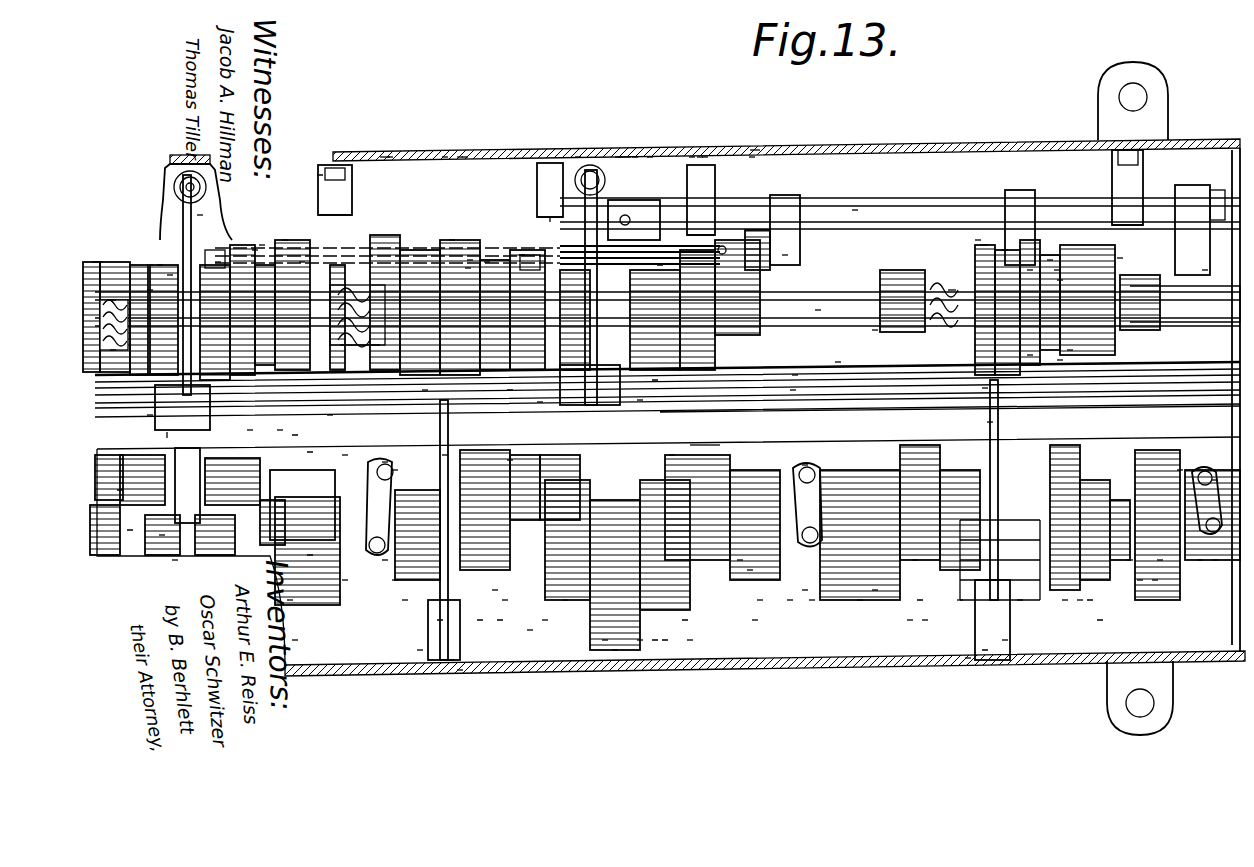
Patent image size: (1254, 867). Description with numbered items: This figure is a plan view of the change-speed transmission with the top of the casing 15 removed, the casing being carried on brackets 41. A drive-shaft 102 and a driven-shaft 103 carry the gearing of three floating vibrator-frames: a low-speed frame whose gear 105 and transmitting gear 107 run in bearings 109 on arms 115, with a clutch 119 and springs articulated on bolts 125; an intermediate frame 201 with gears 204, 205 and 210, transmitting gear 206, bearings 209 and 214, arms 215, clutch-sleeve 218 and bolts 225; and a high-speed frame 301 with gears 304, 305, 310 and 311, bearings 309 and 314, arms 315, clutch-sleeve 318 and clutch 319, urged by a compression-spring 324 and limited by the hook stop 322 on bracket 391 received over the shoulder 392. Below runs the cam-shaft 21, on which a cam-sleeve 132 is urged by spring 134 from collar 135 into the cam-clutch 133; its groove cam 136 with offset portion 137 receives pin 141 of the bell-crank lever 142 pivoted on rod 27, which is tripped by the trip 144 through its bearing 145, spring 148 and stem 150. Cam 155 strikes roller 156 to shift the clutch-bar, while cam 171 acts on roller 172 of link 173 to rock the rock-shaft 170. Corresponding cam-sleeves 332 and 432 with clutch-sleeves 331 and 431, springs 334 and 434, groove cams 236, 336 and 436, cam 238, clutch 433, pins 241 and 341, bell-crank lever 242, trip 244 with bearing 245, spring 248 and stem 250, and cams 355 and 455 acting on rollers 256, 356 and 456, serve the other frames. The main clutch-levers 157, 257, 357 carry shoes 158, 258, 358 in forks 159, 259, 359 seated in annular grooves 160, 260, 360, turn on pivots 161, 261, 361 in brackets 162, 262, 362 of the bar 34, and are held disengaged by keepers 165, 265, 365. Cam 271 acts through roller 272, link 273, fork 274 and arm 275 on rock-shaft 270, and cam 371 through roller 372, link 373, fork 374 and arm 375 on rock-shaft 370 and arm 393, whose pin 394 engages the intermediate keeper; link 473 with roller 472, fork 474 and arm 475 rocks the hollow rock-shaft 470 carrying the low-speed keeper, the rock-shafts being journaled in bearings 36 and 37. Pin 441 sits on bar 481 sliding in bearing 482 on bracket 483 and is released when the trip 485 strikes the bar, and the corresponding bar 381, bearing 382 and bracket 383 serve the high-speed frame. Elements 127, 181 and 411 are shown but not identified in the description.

The casing 15 is at (757, 155).
The cam-shaft 21 is at (818, 310).
The rod 27 is at (793, 390).
The bar 34 is at (705, 435).
The bearings 36 is at (560, 200).
The bearings 37 is at (915, 203).
The brackets 41 is at (1145, 78).
The drive-shaft 102 is at (420, 650).
The driven-shaft 103 is at (838, 362).
The gear 105 is at (162, 535).
The transmitting gear 107 is at (175, 560).
The bearings 109 is at (295, 435).
The arms 115 is at (170, 435).
The clutch 119 is at (310, 555).
The bolts 125 is at (160, 265).
The collar 127 is at (95, 262).
The cam-sleeve 132 is at (170, 275).
The cam-clutch 133 is at (285, 240).
The spring 134 is at (118, 287).
The collar 135 is at (100, 262).
The cam 136 is at (150, 290).
The offset portion 137 is at (150, 265).
The pin 141 is at (118, 352).
The bell-crank lever 142 is at (150, 415).
The trip 144 is at (218, 262).
The bearing 145 is at (250, 430).
The spring 148 is at (205, 222).
The stem 150 is at (280, 430).
The cam 155 is at (330, 415).
The roller 156 is at (345, 455).
The clutch lever 157 is at (320, 175).
The shoes 158 is at (395, 580).
The fork 159 is at (405, 600).
The annular groove 160 is at (385, 560).
The pivot 161 is at (295, 640).
The bracket 162 is at (290, 600).
The keeper 165 is at (390, 157).
The rock-shaft 170 is at (385, 157).
The cam 171 is at (255, 250).
The roller 172 is at (302, 262).
The link 173 is at (262, 245).
The gear 181 is at (345, 580).
The vibrator-frame 201 is at (640, 640).
The gear 204 is at (605, 640).
The gear 205 is at (545, 620).
The transmitting gear 206 is at (310, 452).
The bearings 209 is at (690, 640).
The gear 210 is at (530, 630).
The bearings 214 is at (480, 620).
The arms 215 is at (500, 620).
The clutch-sleeve 218 is at (760, 600).
The bolts 225 is at (505, 600).
The cam 236 is at (578, 157).
The cam 238 is at (618, 157).
The pin 241 is at (628, 157).
The bell-crank lever 242 is at (540, 402).
The trip 244 is at (635, 157).
The bearing 245 is at (565, 600).
The spring 248 is at (622, 157).
The stem 250 is at (640, 400).
The roller 256 is at (660, 265).
The clutch lever 257 is at (805, 465).
The shoes 258 is at (790, 600).
The fork 259 is at (805, 590).
The annular groove 260 is at (755, 620).
The pivot 261 is at (750, 570).
The bracket 262 is at (740, 560).
The keeper 265 is at (752, 157).
The rock-shaft 270 is at (1050, 260).
The cam 271 is at (705, 157).
The roller 272 is at (700, 157).
The link 273 is at (692, 157).
The positioning fork 274 is at (672, 455).
The arm 275 is at (650, 157).
The vibrator-frame 301 is at (1065, 600).
The gear 304 is at (1020, 600).
The gear 305 is at (960, 600).
The bearings 309 is at (860, 600).
The gear 310 is at (812, 600).
The gear 311 is at (875, 330).
The bearings 314 is at (1080, 600).
The arms 315 is at (920, 600).
The clutch-sleeve 318 is at (1160, 560).
The clutch 319 is at (1140, 580).
The stop 322 is at (875, 590).
The compression-spring 324 is at (915, 560).
The clutch-sleeve 331 is at (1120, 258).
The cam-sleeve 332 is at (978, 240).
The spring 334 is at (952, 290).
The cam 336 is at (984, 245).
The pin 341 is at (985, 388).
The cam 355 is at (1060, 360).
The roller 356 is at (1070, 350).
The clutch lever 357 is at (1215, 480).
The shoes 358 is at (1200, 560).
The fork 359 is at (1155, 580).
The annular groove 360 is at (1215, 560).
The pivot 361 is at (1130, 560).
The bracket 362 is at (1180, 470).
The keeper 365 is at (1205, 270).
The rock-shaft 370 is at (855, 210).
The cam 371 is at (1060, 280).
The roller 372 is at (1057, 270).
The link 373 is at (1030, 270).
The positioning fork 374 is at (1030, 355).
The arm 375 is at (1005, 250).
The bar 381 is at (990, 422).
The bearing 382 is at (1005, 640).
The bracket 383 is at (968, 658).
The bracket 391 is at (925, 620).
The shoulder 392 is at (910, 620).
The arm 393 is at (785, 255).
The pin 394 is at (795, 375).
The gear 411 is at (470, 260).
The clutch-sleeve 431 is at (522, 255).
The cam-sleeve 432 is at (425, 390).
The clutch 433 is at (487, 262).
The spring 434 is at (360, 350).
The cam 436 is at (465, 157).
The pin 441 is at (445, 455).
The cam 455 is at (385, 462).
The roller 456 is at (395, 470).
The rock-shaft 470 is at (445, 157).
The roller 472 is at (468, 268).
The link 473 is at (452, 240).
The positioning fork 474 is at (510, 460).
The arm 475 is at (460, 157).
The bar 481 is at (445, 660).
The bearing 482 is at (460, 670).
The bracket 483 is at (452, 660).
The trip 485 is at (495, 590).